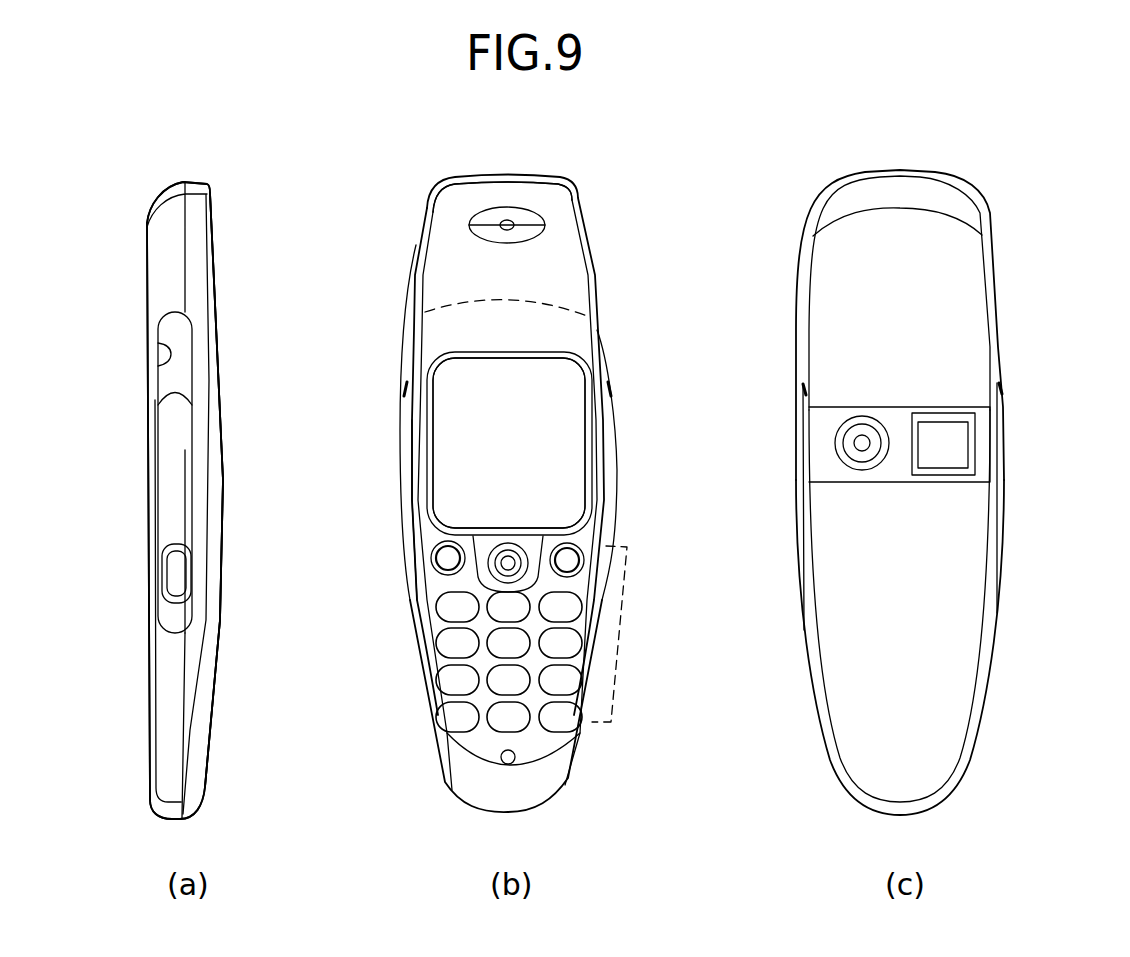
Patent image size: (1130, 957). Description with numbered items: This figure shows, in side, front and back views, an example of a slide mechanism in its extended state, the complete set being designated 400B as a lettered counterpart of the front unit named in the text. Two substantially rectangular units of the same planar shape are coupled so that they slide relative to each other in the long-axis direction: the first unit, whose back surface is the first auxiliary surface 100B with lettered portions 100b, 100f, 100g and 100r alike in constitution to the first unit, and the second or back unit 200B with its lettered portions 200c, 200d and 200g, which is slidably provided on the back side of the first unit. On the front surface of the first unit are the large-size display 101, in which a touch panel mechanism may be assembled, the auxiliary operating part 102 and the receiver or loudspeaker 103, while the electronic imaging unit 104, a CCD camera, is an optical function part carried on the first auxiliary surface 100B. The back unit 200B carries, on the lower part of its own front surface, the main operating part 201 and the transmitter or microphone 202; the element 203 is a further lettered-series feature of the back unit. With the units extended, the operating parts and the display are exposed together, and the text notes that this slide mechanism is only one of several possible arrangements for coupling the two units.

The front unit 400B is at (307, 116).
The back unit 200B is at (162, 188).
The back unit portion 200c is at (452, 372).
The back unit portion 200d is at (552, 197).
The back unit portion 200g is at (163, 361).
The main operating part 201 is at (502, 193).
The transmitter 202 is at (850, 433).
The flash window 203 is at (967, 448).
The display 101 is at (565, 428).
The first auxiliary surface portion 100b is at (580, 467).
The first auxiliary surface 100B is at (152, 760).
The front unit portion 100f is at (226, 570).
The front unit portion 100g is at (174, 505).
The front unit portion 100r is at (822, 460).
The auxiliary operating part 102 is at (628, 578).
The receiver 103 is at (510, 764).
The electronic imaging unit 104 is at (161, 570).